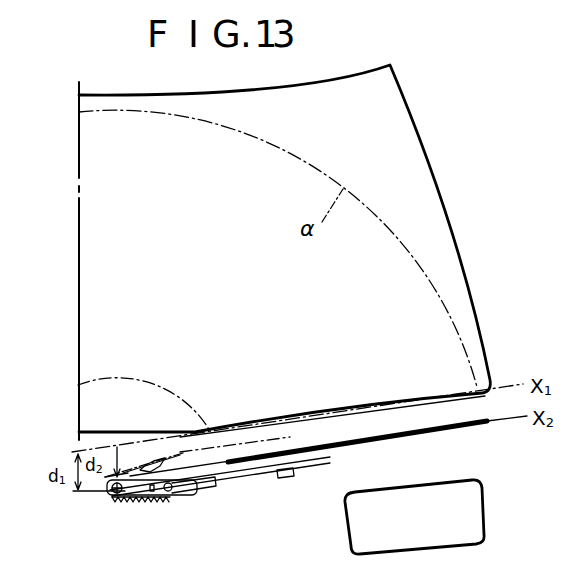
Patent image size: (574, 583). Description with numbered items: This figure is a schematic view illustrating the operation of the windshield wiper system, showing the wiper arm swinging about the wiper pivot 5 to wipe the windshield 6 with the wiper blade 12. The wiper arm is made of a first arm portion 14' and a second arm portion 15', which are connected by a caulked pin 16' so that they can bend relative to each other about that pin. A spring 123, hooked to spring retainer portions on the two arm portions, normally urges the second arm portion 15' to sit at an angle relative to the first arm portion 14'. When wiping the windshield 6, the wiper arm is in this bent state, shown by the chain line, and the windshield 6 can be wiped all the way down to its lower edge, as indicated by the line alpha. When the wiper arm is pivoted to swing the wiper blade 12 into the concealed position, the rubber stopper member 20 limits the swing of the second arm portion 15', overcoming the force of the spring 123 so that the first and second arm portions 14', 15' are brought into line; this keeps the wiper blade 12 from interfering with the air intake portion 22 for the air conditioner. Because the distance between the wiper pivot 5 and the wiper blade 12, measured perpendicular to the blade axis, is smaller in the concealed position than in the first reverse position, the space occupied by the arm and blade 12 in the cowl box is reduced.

The windshield 6 is at (415, 163).
The wiper blade 12 is at (433, 436).
The stopper member 20 is at (295, 478).
The air intake portion 22 is at (486, 492).
The wiper pivot 5 is at (106, 491).
The spring 123 is at (148, 502).
The caulked pin 16' is at (162, 520).
The second arm portion 15' is at (204, 509).
The first arm portion 14' is at (144, 440).